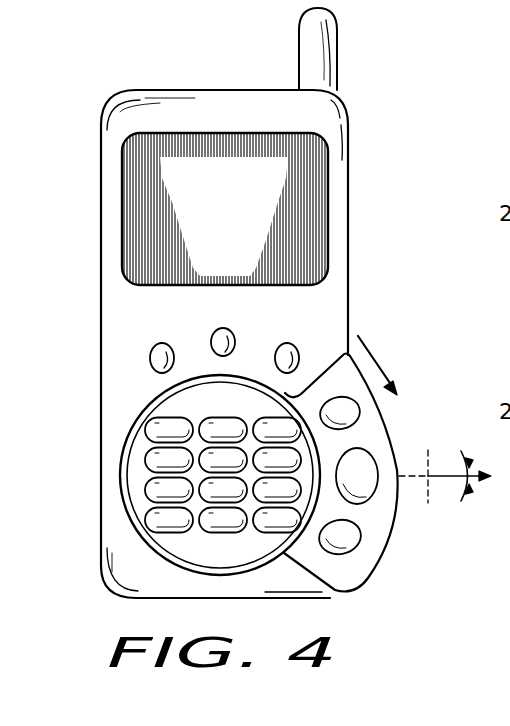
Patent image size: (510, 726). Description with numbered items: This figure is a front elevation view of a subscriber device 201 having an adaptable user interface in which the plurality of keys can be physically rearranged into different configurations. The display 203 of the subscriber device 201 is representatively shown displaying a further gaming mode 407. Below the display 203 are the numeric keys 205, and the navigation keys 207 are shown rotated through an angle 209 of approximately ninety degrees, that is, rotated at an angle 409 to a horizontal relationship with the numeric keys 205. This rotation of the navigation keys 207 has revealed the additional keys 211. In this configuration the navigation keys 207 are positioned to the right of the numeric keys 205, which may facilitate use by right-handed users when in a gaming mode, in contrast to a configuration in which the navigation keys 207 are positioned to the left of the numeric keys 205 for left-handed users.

The subscriber device 201 is at (348, 268).
The display 203 is at (122, 207).
The numeric keys 205 is at (148, 494).
The navigation keys 207 is at (357, 575).
The angle 209 is at (375, 349).
The additional keys 211 is at (236, 338).
The further gaming mode 407 is at (247, 255).
The angle 409 is at (472, 507).